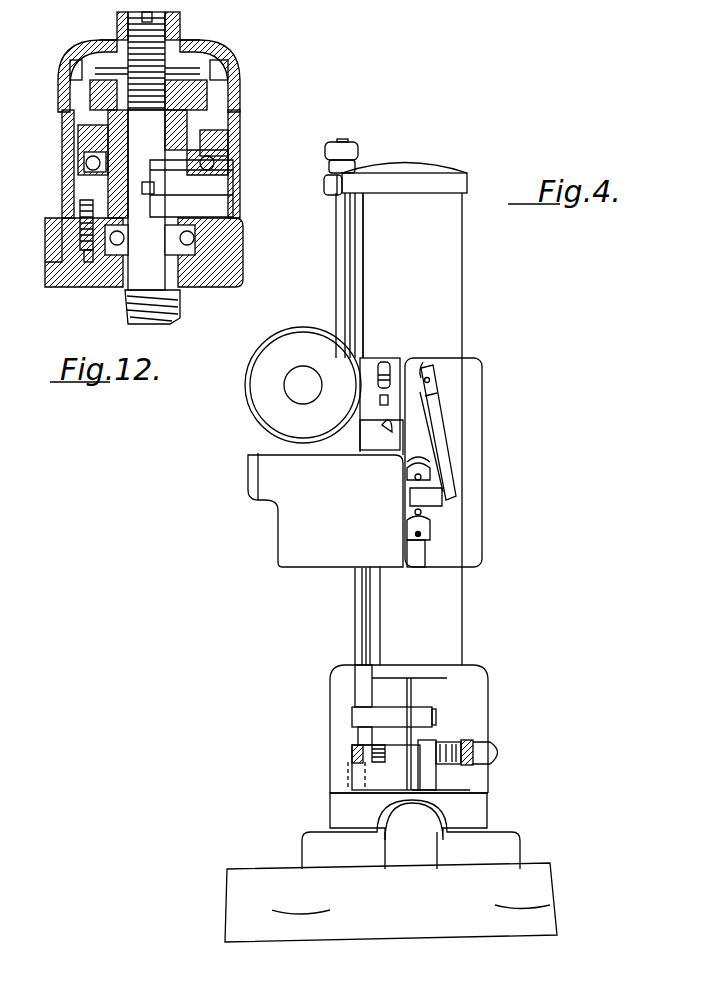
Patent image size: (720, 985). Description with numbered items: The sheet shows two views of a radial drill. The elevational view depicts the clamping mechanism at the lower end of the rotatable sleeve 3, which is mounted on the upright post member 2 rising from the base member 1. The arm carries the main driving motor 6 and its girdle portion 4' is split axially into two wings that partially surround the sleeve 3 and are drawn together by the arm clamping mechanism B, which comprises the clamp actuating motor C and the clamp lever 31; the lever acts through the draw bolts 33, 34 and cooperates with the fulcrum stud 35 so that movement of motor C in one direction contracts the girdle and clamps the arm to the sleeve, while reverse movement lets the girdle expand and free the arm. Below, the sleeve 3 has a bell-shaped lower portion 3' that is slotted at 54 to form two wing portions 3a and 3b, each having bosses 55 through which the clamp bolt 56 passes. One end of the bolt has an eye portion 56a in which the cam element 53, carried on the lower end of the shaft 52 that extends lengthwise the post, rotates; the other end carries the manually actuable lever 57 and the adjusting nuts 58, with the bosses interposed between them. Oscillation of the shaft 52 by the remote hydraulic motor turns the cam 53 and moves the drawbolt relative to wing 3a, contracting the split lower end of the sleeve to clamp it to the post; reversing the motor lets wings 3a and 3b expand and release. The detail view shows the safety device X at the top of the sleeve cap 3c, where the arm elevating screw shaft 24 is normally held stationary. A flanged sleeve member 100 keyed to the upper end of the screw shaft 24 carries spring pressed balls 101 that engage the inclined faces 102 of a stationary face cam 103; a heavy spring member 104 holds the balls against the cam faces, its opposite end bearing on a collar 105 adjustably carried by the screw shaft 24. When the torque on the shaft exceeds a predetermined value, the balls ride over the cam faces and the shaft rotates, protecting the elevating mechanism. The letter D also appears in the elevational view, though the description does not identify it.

In FIG. 4, the base member 1 is at (265, 875).
In FIG. 4, the upright post member 2 is at (348, 786).
In FIG. 4, the rotatable sleeve 3 is at (428, 429).
In FIG. 4, the bell-shaped lower portion 3' is at (426, 729).
In FIG. 4, the wing portion 3a is at (394, 690).
In FIG. 4, the wing portion 3b is at (430, 698).
In FIG. 12, the sleeve cap 3c is at (212, 290).
In FIG. 4, the sleeve cap 3c is at (462, 183).
In FIG. 4, the girdle portion 4' is at (456, 462).
In FIG. 4, the main driving motor 6 is at (248, 398).
In FIG. 12, the screw shaft 24 is at (142, 302).
In FIG. 4, the screw shaft 24 is at (338, 243).
In FIG. 4, the clamp lever 31 is at (440, 432).
In FIG. 4, the draw bolt 33 is at (380, 362).
In FIG. 4, the draw bolt 34 is at (425, 540).
In FIG. 4, the fulcrum stud 35 is at (426, 362).
In FIG. 4, the shaft 52 is at (356, 613).
In FIG. 4, the cam element 53 is at (352, 752).
In FIG. 4, the slot 54 is at (411, 690).
In FIG. 4, the bosses 55 is at (436, 788).
In FIG. 4, the clamp bolt 56 is at (376, 746).
In FIG. 4, the eye portion 56a is at (358, 745).
In FIG. 4, the manually actuable lever 57 is at (492, 760).
In FIG. 4, the adjusting nuts 58 is at (470, 748).
In FIG. 12, the flanged sleeve member 100 is at (108, 125).
In FIG. 12, the spring pressed balls 101 is at (88, 170).
In FIG. 12, the inclined faces 102 is at (187, 173).
In FIG. 12, the stationary face cam 103 is at (222, 182).
In FIG. 12, the spring member 104 is at (226, 135).
In FIG. 12, the collar 105 is at (222, 68).
In FIG. 4, the safety device X is at (360, 155).
In FIG. 4, the arm clamping mechanism B is at (430, 517).
In FIG. 4, the clamp actuating motor C is at (414, 506).
In FIG. 4, the cam D is at (412, 440).